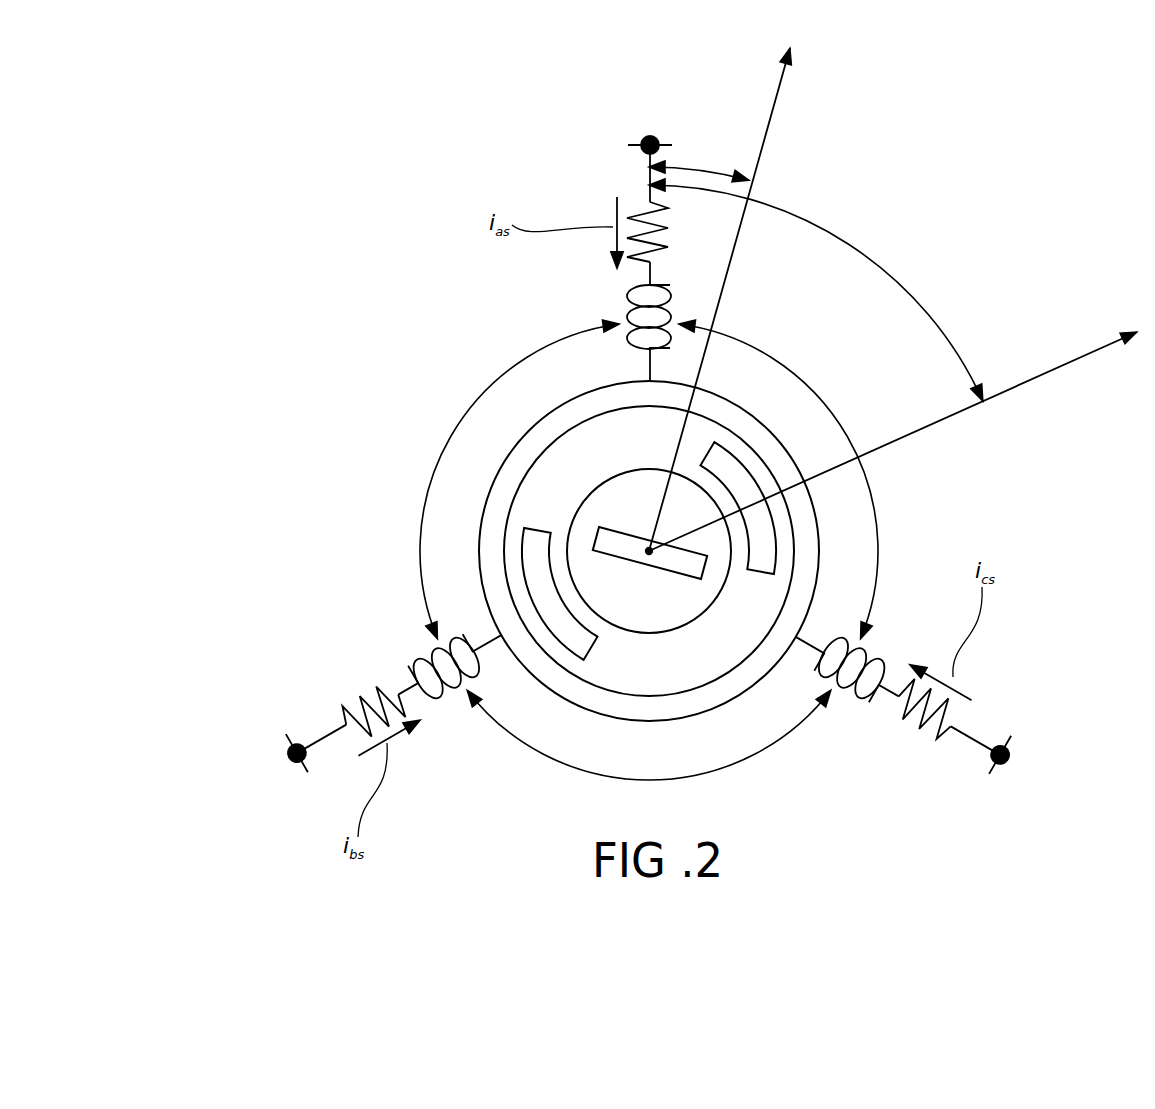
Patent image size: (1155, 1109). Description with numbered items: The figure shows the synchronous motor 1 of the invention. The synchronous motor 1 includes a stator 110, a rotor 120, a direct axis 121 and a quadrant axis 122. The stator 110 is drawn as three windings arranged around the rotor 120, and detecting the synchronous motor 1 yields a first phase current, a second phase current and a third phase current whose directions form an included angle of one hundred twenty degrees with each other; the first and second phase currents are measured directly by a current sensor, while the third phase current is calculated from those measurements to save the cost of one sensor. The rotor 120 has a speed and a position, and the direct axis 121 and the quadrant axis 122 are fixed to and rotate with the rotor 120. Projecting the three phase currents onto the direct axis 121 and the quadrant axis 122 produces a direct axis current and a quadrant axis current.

The synchronous motor 1 is at (385, 267).
The stator 110 is at (618, 174).
The rotor 120 is at (588, 491).
The direct axis 121 is at (775, 108).
The quadrant axis 122 is at (1065, 362).